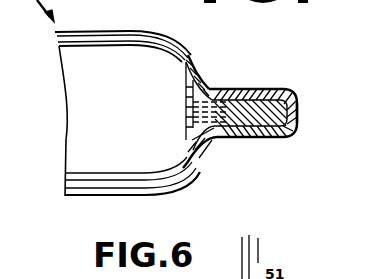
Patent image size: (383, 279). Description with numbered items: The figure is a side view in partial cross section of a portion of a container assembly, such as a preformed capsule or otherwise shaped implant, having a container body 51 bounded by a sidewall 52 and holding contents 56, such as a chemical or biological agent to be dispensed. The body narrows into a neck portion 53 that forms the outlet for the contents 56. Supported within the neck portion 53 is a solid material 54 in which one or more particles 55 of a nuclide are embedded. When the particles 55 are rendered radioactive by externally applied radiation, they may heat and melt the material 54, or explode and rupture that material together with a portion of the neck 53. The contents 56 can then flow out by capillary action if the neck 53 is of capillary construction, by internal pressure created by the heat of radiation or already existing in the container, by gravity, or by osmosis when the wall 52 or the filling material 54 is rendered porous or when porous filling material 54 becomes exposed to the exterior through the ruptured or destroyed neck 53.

The container body 51 is at (100, 28).
The sidewall 52 is at (186, 47).
The neck portion 53 is at (252, 90).
The solid material 54 is at (263, 98).
The particles 55 is at (291, 103).
The contents 56 is at (203, 136).